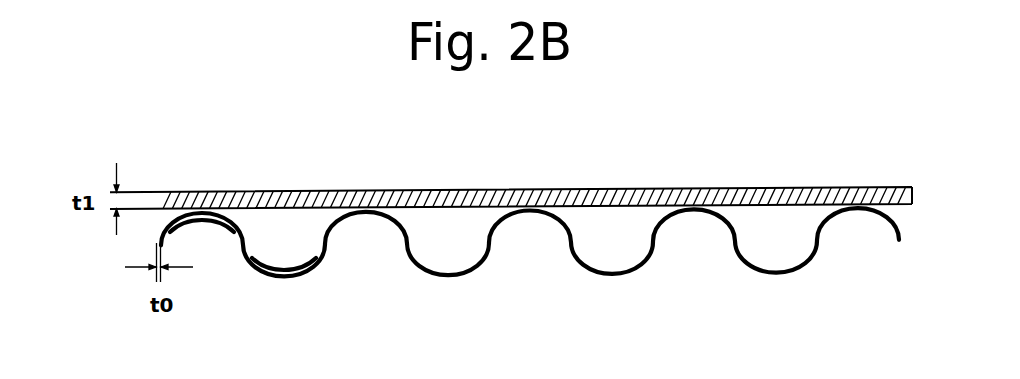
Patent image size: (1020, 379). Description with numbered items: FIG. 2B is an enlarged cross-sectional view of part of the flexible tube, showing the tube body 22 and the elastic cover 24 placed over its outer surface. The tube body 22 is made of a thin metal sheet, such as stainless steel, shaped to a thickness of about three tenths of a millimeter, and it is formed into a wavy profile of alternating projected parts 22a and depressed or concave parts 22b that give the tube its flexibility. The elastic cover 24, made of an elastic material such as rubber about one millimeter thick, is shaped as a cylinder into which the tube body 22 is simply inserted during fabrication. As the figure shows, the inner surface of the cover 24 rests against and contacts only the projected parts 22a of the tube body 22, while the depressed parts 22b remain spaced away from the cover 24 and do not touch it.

The tube body 22 is at (580, 262).
The projected parts 22a is at (235, 210).
The depressed parts 22b is at (265, 268).
The elastic cover 24 is at (749, 188).